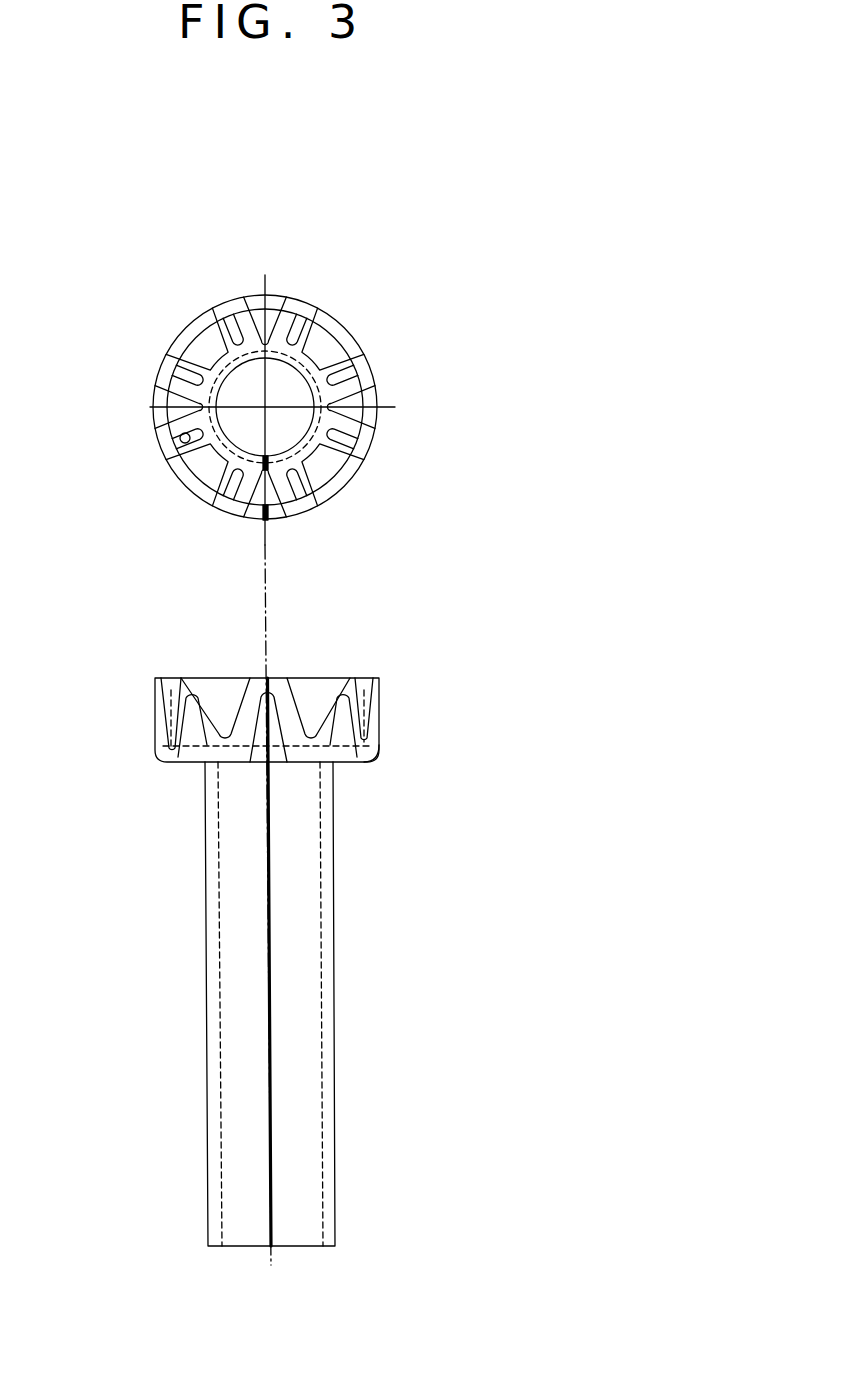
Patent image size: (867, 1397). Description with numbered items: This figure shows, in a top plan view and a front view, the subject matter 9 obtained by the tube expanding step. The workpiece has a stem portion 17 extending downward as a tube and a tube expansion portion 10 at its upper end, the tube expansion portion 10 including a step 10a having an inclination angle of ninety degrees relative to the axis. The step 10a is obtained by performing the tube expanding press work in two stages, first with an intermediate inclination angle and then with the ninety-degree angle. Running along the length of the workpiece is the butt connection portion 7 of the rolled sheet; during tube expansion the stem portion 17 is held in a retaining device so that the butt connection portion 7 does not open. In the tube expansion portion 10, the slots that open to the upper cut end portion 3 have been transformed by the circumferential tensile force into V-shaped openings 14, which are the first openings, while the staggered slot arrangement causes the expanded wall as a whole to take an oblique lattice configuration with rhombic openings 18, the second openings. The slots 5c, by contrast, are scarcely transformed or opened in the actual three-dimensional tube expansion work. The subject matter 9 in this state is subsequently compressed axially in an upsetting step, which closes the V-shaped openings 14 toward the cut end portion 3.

The upper cut end portion 3 is at (275, 298).
The slots 5c is at (318, 308).
The butt connection portion 7 is at (272, 520).
The subject matter 9 is at (412, 368).
The tube expansion portion 10 is at (230, 281).
The step 10a is at (378, 768).
The V-shaped openings 14 is at (230, 306).
The stem portion 17 is at (337, 942).
The rhombic openings 18 is at (259, 300).